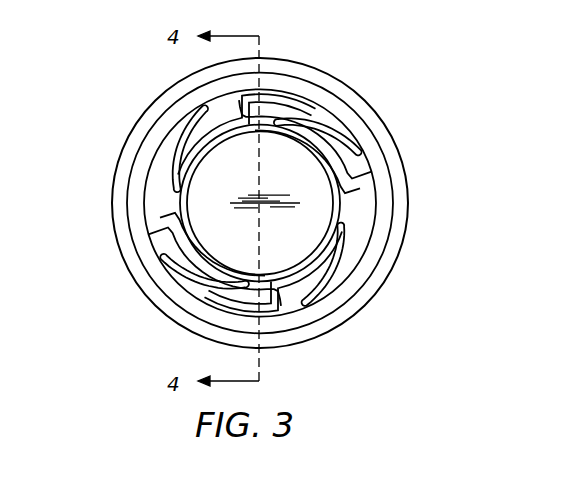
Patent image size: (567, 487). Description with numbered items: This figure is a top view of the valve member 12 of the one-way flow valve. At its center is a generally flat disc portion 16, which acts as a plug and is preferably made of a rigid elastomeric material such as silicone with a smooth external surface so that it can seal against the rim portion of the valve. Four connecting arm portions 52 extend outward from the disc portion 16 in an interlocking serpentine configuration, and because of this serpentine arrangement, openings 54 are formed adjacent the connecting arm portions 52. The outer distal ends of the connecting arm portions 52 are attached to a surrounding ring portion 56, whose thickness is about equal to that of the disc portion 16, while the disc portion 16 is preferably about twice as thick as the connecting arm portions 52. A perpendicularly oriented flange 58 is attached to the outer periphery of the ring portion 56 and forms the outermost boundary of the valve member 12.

The valve member 12 is at (108, 98).
The disc portion 16 is at (294, 158).
The connecting arm portions 52 is at (339, 263).
The openings 54 is at (368, 228).
The ring portion 56 is at (331, 302).
The flange 58 is at (160, 306).